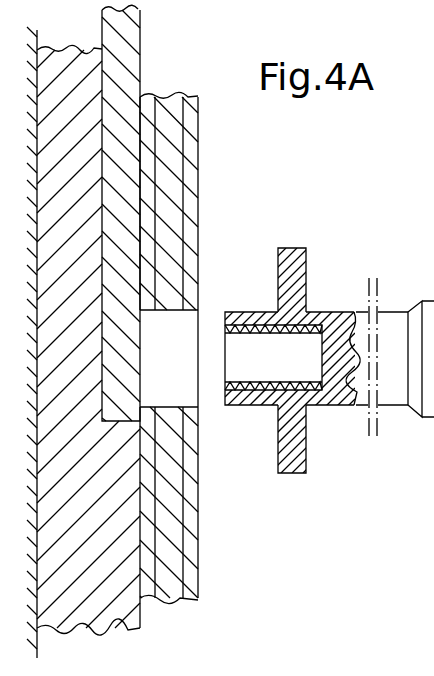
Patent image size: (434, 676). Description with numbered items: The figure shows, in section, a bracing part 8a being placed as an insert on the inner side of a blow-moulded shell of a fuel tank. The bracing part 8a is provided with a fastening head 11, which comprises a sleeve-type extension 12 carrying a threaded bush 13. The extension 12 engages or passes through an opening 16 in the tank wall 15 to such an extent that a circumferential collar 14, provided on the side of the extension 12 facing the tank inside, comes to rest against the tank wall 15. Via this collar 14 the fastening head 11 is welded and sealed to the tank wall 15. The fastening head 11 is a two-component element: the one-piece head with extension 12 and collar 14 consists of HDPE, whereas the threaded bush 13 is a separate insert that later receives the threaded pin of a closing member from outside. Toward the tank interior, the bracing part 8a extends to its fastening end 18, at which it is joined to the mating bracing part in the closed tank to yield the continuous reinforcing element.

The bracing part 8a is at (392, 322).
The fastening head 11 is at (272, 472).
The sleeve-type extension 12 is at (248, 311).
The threaded bush 13 is at (302, 335).
The circumferential collar 14 is at (298, 268).
The tank wall 15 is at (197, 583).
The opening 16 is at (178, 347).
The fastening end 18 is at (421, 408).